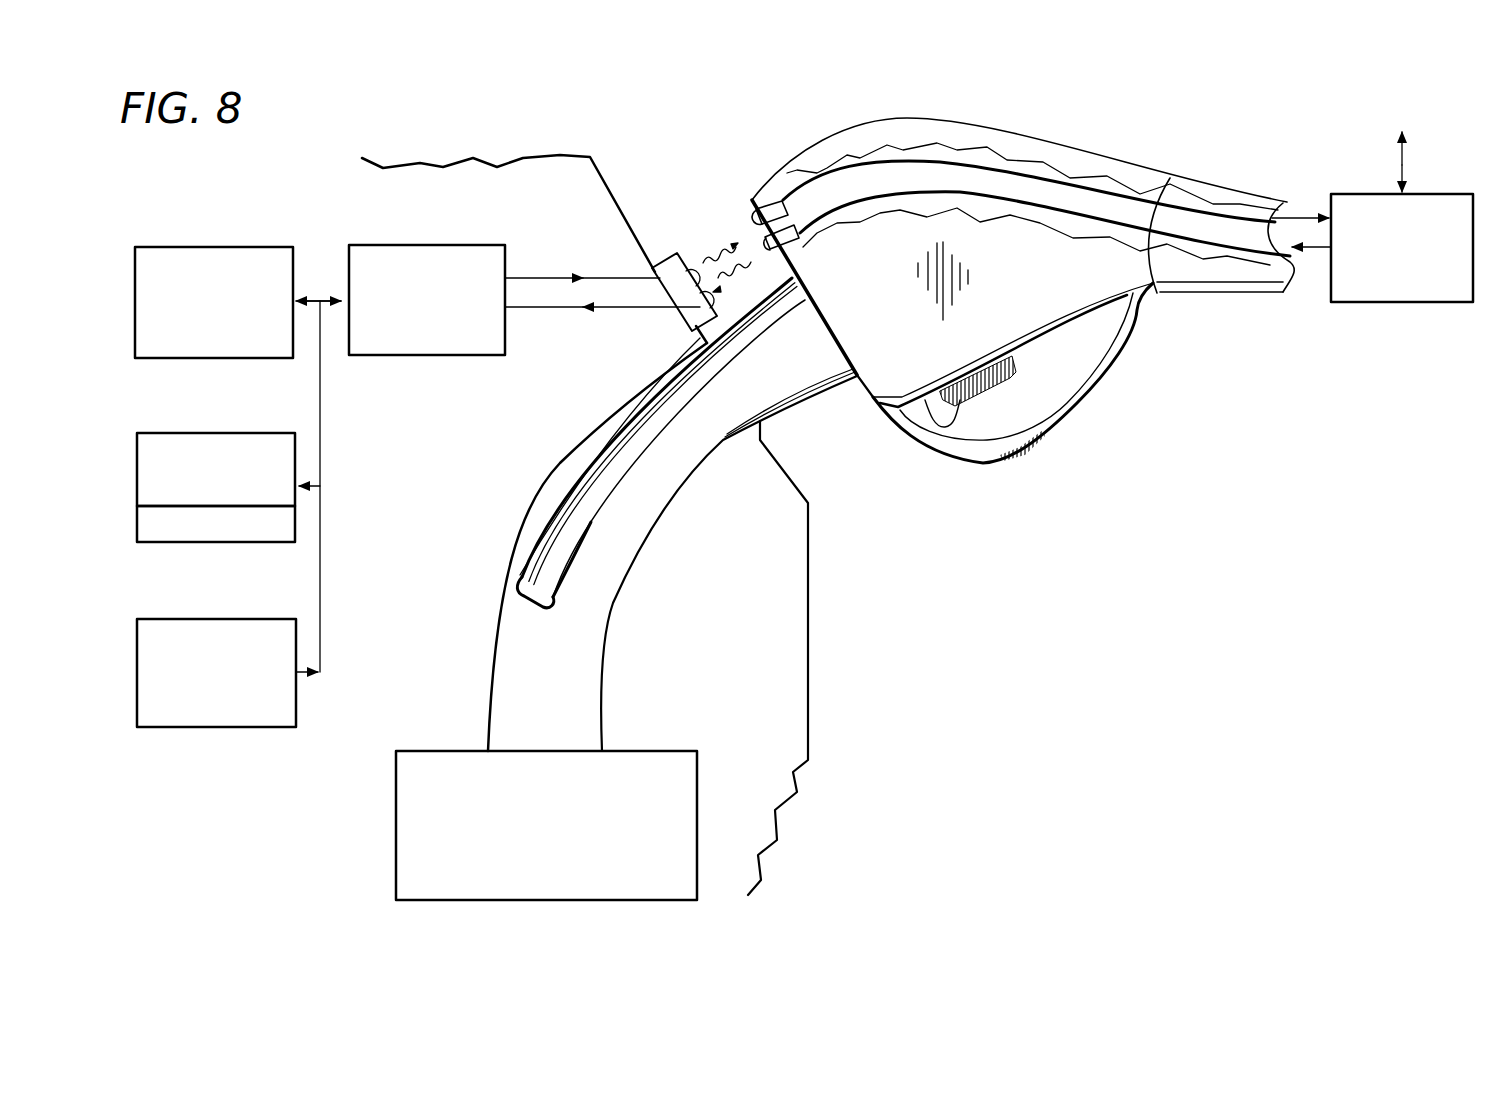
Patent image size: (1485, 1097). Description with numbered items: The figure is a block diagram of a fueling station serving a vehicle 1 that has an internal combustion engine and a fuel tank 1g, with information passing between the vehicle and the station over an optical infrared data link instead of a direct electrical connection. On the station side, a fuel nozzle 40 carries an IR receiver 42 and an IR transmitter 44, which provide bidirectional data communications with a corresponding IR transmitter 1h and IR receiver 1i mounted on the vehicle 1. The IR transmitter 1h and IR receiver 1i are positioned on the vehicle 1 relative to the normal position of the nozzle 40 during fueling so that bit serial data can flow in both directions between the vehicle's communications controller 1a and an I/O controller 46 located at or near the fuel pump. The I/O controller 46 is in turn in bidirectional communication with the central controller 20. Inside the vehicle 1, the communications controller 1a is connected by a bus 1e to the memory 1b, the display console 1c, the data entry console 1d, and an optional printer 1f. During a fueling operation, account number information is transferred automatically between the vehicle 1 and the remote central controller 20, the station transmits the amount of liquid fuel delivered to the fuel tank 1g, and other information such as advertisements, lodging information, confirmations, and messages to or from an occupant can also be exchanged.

The vehicle 1 is at (447, 147).
The communications controller 1a is at (390, 247).
The memory 1b is at (178, 247).
The display console 1c is at (180, 433).
The data entry console 1d is at (180, 619).
The bus 1e is at (327, 518).
The printer 1f is at (137, 527).
The fuel tank 1g is at (640, 747).
The IR transmitter 1h is at (686, 266).
The IR receiver 1i is at (707, 303).
The central controller 20 is at (1379, 116).
The fuel nozzle 40 is at (973, 117).
The IR receiver 42 is at (752, 222).
The IR transmitter 44 is at (757, 240).
The I/O controller 46 is at (1398, 302).